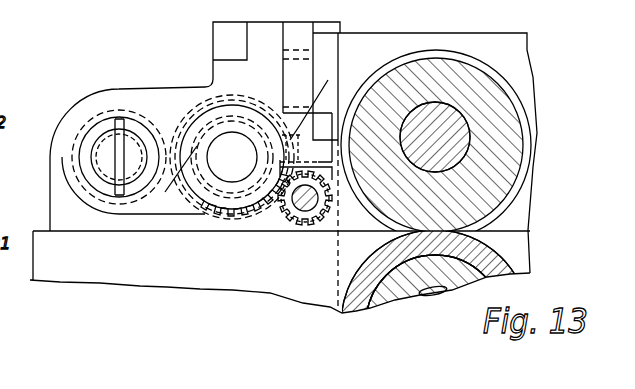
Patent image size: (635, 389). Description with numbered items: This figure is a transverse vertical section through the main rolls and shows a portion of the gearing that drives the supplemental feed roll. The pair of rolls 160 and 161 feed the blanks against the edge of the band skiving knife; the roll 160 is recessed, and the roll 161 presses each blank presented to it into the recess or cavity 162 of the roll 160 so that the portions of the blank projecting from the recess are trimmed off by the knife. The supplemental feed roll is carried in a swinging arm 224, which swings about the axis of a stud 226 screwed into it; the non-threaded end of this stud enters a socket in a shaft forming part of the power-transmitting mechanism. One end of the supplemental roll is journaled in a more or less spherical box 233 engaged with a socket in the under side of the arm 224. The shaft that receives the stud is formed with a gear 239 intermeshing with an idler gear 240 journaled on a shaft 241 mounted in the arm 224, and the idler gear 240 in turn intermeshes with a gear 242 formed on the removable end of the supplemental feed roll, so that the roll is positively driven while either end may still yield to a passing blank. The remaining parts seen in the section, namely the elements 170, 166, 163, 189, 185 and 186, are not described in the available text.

The housing body 170 is at (195, 126).
The frame 166 is at (425, 171).
The box 233 is at (313, 115).
The recess or cavity 162 is at (508, 80).
The roll 160 is at (505, 113).
The shaft 163 is at (447, 148).
The base plate 189 is at (518, 242).
The shaft 241 is at (232, 157).
The stud 226 is at (105, 183).
The gear 239 is at (132, 200).
The swinging arm 224 is at (173, 200).
The idler gear 240 is at (248, 217).
The gear 242 is at (295, 222).
The cam ring 185 is at (357, 312).
The roll 161 is at (390, 292).
The cam lobe 186 is at (428, 295).